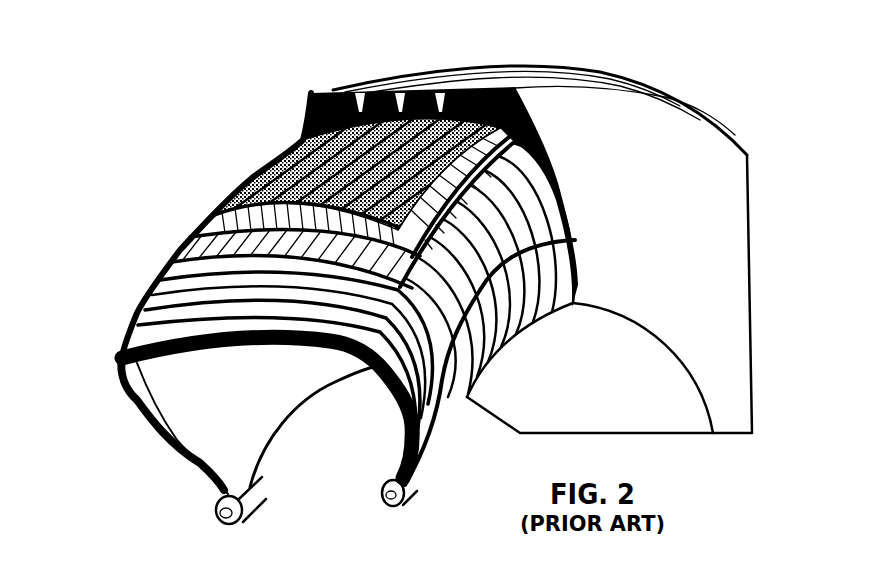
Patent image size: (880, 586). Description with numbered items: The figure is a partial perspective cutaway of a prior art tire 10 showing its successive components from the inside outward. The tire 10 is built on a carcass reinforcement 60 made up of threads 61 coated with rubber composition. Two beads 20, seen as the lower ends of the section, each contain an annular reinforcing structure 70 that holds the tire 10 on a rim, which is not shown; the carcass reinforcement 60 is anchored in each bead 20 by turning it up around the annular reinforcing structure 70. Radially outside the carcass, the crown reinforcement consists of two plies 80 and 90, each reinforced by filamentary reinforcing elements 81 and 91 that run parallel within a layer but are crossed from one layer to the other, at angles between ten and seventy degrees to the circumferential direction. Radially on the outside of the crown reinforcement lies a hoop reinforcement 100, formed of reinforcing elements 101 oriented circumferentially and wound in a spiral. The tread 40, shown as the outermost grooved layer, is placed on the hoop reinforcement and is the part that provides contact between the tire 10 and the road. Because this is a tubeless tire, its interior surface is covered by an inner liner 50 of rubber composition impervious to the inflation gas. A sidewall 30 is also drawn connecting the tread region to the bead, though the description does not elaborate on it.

The tire 10 is at (702, 58).
The bead 20 is at (372, 460).
The sidewall 30 is at (607, 231).
The tread 40 is at (352, 85).
The inner liner 50 is at (238, 400).
The carcass reinforcement 60 is at (73, 247).
The threads 61 is at (165, 281).
The annular reinforcing structure 70 is at (382, 490).
The crown reinforcement ply 80 is at (117, 244).
The filamentary reinforcing elements 81 is at (213, 224).
The crown reinforcement ply 90 is at (120, 167).
The filamentary reinforcing elements 91 is at (248, 181).
The hoop reinforcement 100 is at (160, 30).
The reinforcing elements 101 is at (297, 148).